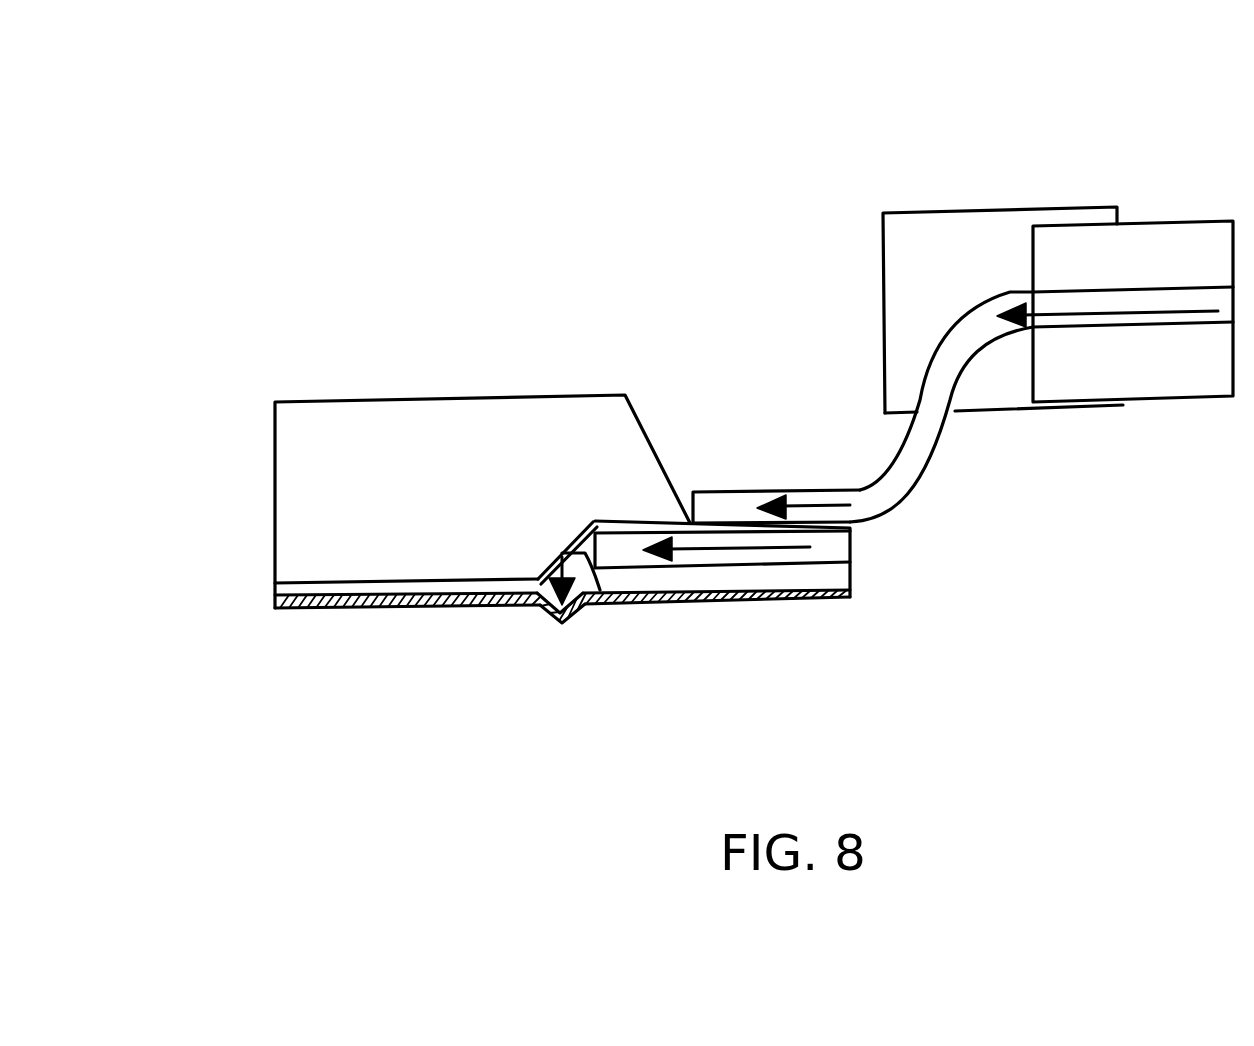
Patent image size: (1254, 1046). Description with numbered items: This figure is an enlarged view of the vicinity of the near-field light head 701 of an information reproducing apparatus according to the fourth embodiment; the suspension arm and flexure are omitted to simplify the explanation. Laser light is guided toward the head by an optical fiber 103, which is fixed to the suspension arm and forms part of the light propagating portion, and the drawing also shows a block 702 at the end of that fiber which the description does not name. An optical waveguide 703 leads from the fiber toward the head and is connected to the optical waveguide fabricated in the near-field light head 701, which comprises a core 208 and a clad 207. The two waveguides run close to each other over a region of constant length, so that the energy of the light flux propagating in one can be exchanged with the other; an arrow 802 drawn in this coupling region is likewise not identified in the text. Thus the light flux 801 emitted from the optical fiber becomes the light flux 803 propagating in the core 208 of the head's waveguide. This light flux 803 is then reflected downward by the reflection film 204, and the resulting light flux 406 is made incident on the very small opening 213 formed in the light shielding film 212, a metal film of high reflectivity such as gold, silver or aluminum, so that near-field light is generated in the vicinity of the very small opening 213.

The near-field light head 701 is at (262, 403).
The reflection film 204 is at (562, 553).
The light shielding film 212 is at (392, 608).
The very small opening 213 is at (565, 615).
The light flux 406 is at (600, 590).
The core 208 is at (850, 545).
The clad 207 is at (850, 573).
The light flux 803 is at (717, 550).
The light input section 802 is at (813, 505).
The optical waveguide 703 is at (940, 445).
The light source unit 702 is at (927, 247).
The optical fiber 103 is at (1187, 257).
The light flux 801 is at (1073, 318).